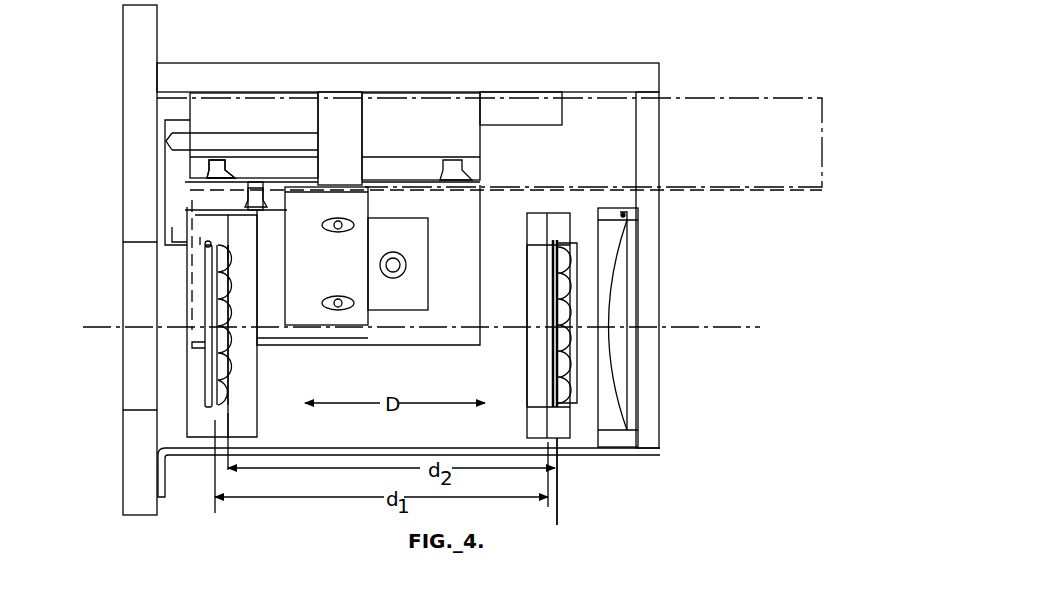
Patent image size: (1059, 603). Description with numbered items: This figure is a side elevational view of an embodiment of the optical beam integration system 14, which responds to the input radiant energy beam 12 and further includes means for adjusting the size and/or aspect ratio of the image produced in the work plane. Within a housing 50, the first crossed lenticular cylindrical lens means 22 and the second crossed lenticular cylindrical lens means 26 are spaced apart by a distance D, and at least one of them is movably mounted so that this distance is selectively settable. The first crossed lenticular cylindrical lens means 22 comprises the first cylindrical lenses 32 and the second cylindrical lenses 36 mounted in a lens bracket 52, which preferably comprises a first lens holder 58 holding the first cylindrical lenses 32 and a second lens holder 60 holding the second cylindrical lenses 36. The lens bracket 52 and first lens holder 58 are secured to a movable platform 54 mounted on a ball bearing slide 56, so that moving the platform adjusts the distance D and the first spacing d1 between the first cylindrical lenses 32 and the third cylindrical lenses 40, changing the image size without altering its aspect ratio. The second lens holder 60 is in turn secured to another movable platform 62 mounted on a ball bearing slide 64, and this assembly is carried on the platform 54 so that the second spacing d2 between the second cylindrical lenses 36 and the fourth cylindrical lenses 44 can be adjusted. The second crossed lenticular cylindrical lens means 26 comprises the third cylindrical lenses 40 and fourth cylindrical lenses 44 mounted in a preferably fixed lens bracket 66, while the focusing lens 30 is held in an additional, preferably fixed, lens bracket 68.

The radiant energy beam 12 is at (100, 318).
The optical beam integration system 14 is at (583, 505).
The first crossed lenticular cylindrical lens means 22 is at (235, 373).
The second crossed lenticular cylindrical lens means 26 is at (540, 345).
The focusing lens 30 is at (617, 297).
The first cylindrical lenses 32 is at (200, 234).
The second cylindrical lenses 36 is at (228, 250).
The third cylindrical lenses 40 is at (553, 240).
The fourth cylindrical lenses 44 is at (565, 258).
The housing 50 is at (410, 62).
The lens bracket 52 is at (178, 363).
The movable platform 54 is at (237, 178).
The ball bearing slide 56 is at (275, 160).
The first lens holder 58 is at (210, 415).
The second lens holder 60 is at (247, 418).
The movable platform 62 is at (270, 277).
The ball bearing slide 64 is at (421, 247).
The lens bracket 66 is at (525, 272).
The lens bracket 68 is at (627, 203).